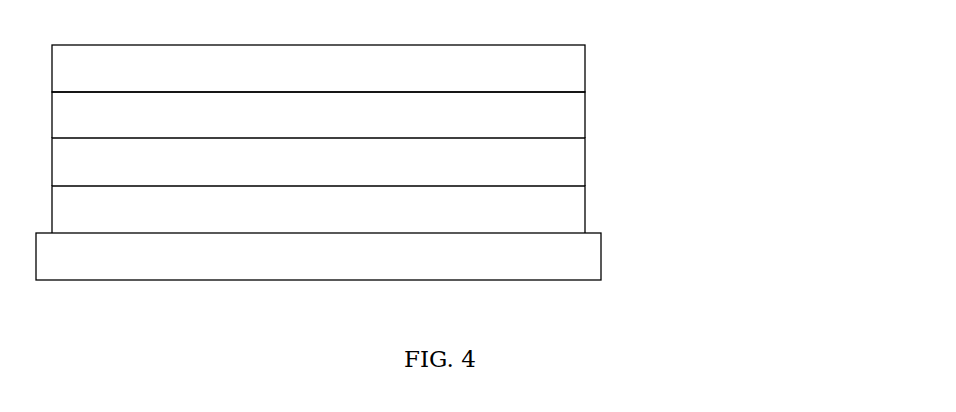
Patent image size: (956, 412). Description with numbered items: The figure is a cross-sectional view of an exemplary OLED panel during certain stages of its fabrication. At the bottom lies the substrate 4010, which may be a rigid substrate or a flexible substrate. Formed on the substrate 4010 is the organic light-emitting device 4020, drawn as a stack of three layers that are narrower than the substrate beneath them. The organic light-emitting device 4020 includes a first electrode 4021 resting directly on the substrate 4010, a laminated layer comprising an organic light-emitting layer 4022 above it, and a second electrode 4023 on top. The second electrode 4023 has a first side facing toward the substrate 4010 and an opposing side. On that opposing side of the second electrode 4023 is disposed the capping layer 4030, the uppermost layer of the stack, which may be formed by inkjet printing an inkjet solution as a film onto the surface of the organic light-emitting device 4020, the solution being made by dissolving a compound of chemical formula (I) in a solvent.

The substrate 4010 is at (601, 257).
The organic light-emitting device 4020 is at (446, 162).
The first electrode 4021 is at (585, 213).
The organic light-emitting layer 4022 is at (585, 167).
The second electrode 4023 is at (585, 123).
The capping layer 4030 is at (585, 79).